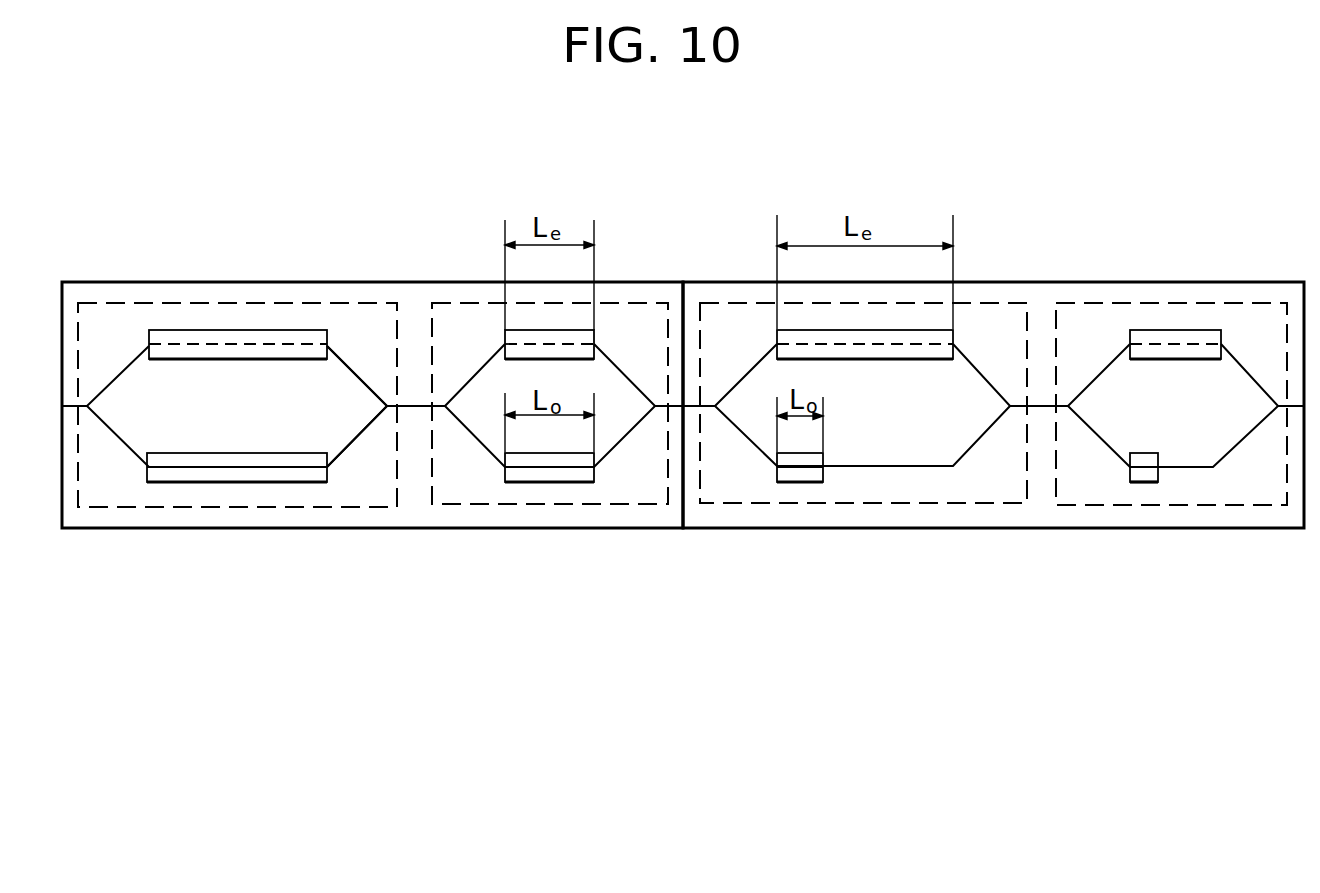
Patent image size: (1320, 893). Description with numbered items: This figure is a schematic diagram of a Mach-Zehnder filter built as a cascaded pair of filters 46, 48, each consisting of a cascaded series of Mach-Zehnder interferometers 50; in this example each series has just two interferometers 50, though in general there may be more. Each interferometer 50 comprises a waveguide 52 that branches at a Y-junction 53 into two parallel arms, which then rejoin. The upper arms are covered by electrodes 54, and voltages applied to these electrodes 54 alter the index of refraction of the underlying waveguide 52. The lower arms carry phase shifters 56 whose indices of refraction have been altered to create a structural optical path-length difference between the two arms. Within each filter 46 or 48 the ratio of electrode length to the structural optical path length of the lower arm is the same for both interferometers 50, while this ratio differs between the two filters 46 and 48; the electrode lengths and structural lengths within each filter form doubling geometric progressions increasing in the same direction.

The filter 46 is at (427, 282).
The filter 48 is at (1088, 283).
The Mach-Zehnder interferometer 50 is at (262, 507).
The waveguide 52 is at (420, 407).
The Y-junction 53 is at (372, 406).
The electrode 54 is at (243, 330).
The phase shifter 56 is at (158, 483).